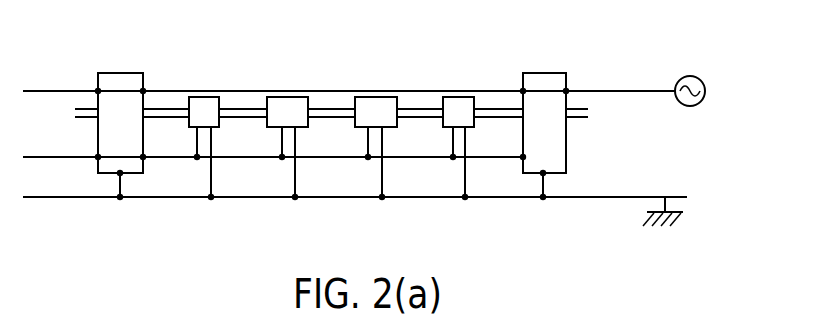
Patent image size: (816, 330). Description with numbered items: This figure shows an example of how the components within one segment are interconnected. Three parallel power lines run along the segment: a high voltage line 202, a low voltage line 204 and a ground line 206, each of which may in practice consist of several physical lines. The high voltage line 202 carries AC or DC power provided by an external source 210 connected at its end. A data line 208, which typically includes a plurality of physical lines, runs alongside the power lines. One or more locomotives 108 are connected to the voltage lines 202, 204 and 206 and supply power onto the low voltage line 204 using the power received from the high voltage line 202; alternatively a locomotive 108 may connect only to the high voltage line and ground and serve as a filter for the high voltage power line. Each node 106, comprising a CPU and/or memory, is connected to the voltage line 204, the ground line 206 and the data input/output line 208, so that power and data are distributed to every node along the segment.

The node 106 is at (289, 107).
The locomotive 108 is at (547, 83).
The high voltage line 202 is at (387, 90).
The low voltage line 204 is at (493, 158).
The ground line 206 is at (570, 198).
The data line 208 is at (586, 120).
The external source 210 is at (705, 91).